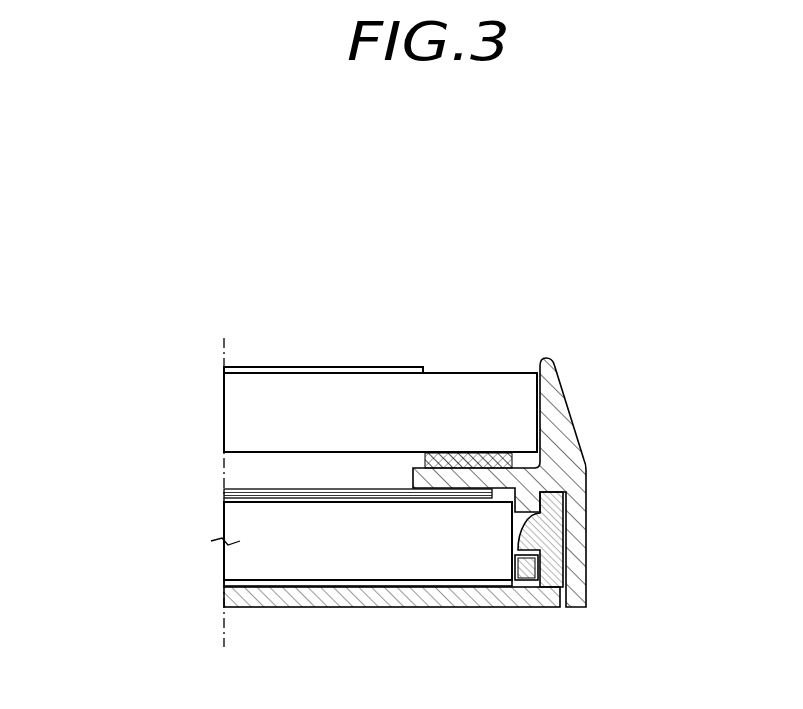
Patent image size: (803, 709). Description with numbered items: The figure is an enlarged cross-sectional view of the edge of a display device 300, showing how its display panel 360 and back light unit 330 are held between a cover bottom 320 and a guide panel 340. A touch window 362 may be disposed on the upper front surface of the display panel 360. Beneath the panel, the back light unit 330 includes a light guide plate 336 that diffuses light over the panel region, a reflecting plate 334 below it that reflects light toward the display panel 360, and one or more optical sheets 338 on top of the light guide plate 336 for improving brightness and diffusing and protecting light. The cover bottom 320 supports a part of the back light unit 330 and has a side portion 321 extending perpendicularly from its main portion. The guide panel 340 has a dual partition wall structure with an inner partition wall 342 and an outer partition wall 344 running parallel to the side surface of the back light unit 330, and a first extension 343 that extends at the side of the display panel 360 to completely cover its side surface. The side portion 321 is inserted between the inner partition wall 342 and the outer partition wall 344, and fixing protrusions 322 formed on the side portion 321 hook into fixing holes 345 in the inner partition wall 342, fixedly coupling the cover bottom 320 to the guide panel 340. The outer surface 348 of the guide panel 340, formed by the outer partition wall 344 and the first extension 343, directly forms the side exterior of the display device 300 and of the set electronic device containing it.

The display device 300 is at (160, 274).
The cover bottom 320 is at (277, 597).
The side portion 321 is at (555, 572).
The fixing protrusion 322 is at (587, 539).
The back light unit 330 is at (286, 537).
The reflecting plate 334 is at (225, 582).
The light guide plate 336 is at (224, 520).
The optical sheets 338 is at (224, 494).
The guide panel 340 is at (541, 478).
The inner partition wall 342 is at (522, 578).
The first extension 343 is at (550, 372).
The outer partition wall 344 is at (578, 522).
The fixing hole 345 is at (547, 523).
The outer surface 348 is at (585, 488).
The display panel 360 is at (452, 382).
The touch window 362 is at (398, 367).